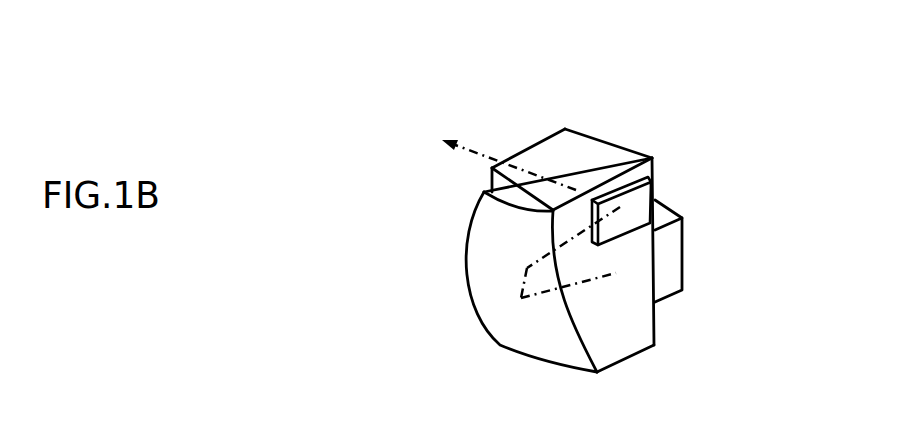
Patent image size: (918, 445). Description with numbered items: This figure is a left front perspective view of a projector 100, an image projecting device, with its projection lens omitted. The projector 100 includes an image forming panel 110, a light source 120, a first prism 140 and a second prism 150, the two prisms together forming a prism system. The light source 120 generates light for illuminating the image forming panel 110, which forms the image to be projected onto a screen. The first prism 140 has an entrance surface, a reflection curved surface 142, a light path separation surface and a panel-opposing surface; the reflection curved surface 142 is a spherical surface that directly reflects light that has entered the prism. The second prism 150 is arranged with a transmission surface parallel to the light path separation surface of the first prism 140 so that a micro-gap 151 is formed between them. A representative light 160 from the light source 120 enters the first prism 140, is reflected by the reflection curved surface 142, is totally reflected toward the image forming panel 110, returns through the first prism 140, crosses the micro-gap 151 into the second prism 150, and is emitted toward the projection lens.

The projector 100 is at (480, 61).
The image forming panel 110 is at (641, 210).
The light source 120 is at (683, 268).
The first prism 140 is at (468, 278).
The reflection curved surface 142 is at (490, 307).
The second prism 150 is at (493, 179).
The micro-gap 151 is at (574, 172).
The representative light 160 is at (572, 290).